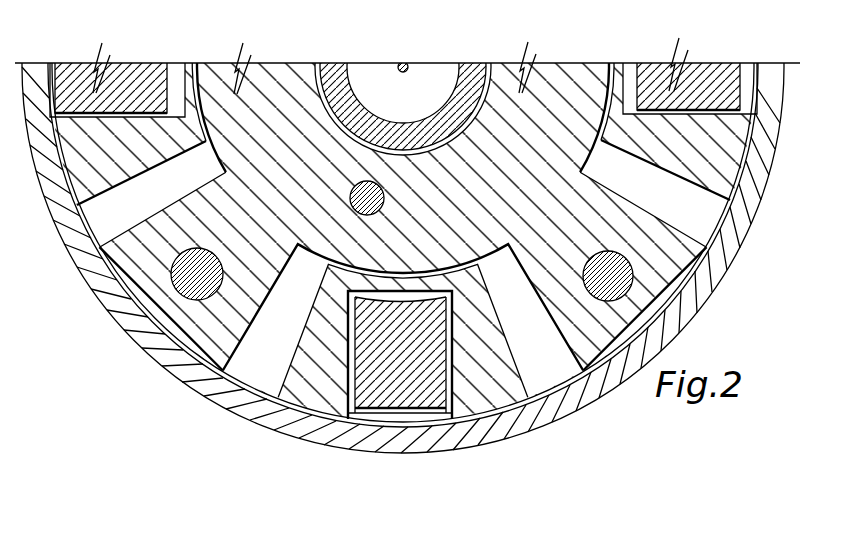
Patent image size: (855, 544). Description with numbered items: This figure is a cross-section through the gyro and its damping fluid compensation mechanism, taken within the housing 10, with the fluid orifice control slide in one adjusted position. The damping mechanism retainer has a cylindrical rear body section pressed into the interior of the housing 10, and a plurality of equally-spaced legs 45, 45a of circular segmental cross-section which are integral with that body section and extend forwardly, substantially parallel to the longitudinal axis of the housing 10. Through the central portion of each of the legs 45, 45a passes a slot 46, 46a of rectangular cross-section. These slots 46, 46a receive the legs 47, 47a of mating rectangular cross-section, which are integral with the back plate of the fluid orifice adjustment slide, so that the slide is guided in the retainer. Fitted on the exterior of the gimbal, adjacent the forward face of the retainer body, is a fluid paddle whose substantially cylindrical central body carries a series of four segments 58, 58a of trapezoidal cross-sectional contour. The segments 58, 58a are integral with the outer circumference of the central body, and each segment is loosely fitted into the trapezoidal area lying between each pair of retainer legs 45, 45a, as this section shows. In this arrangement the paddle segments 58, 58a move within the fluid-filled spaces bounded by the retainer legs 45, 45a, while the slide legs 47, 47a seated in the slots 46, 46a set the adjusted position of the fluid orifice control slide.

The housing 10 is at (530, 423).
The leg 45 is at (323, 413).
The leg 45a is at (718, 180).
The slot 46 is at (450, 381).
The slot 46a is at (630, 72).
The leg 47 is at (390, 400).
The leg 47a is at (713, 68).
The segment 58 is at (190, 336).
The segment 58a is at (600, 340).